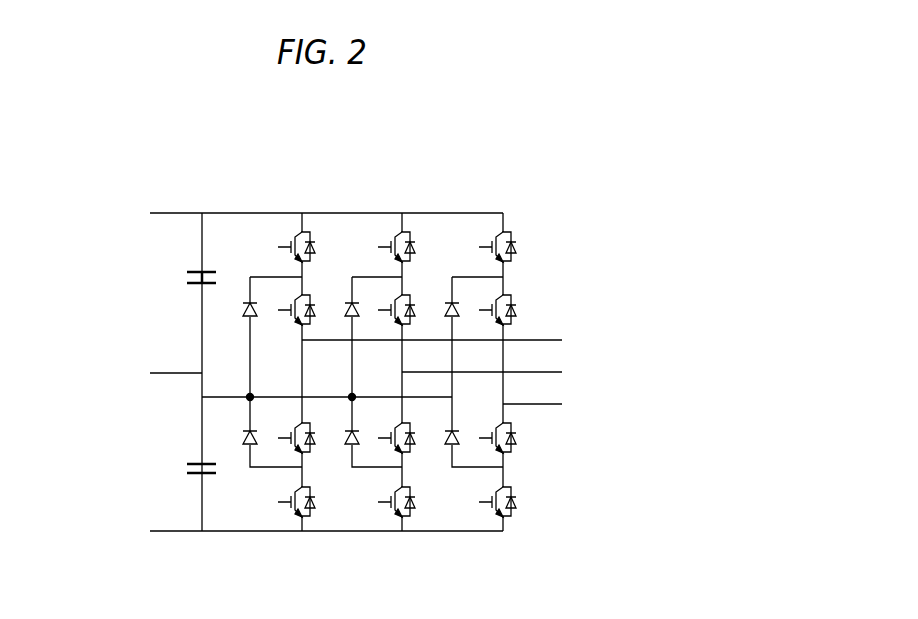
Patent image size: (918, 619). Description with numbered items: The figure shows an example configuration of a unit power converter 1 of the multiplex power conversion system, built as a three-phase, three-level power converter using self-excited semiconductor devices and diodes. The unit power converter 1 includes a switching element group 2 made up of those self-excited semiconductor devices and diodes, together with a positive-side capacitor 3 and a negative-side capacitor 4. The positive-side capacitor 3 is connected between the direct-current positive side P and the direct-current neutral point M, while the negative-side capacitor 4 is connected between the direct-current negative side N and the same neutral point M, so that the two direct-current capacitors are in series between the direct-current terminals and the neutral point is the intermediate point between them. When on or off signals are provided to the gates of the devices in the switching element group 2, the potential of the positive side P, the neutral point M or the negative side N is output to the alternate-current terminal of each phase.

The unit power converter 1 is at (502, 188).
The switching element group 2 is at (385, 196).
The positive-side capacitor 3 is at (193, 272).
The negative-side capacitor 4 is at (193, 477).